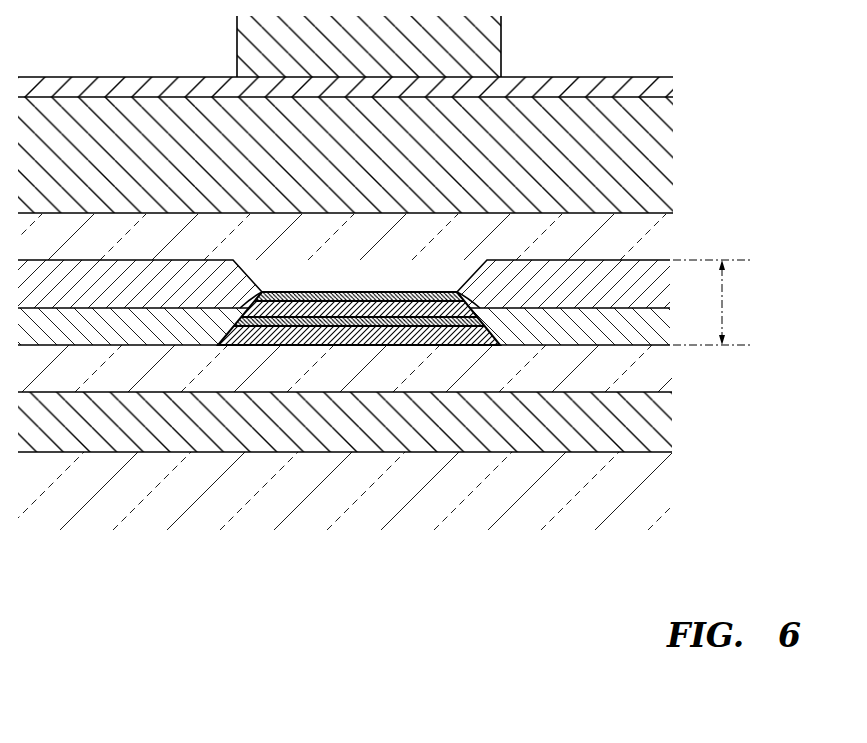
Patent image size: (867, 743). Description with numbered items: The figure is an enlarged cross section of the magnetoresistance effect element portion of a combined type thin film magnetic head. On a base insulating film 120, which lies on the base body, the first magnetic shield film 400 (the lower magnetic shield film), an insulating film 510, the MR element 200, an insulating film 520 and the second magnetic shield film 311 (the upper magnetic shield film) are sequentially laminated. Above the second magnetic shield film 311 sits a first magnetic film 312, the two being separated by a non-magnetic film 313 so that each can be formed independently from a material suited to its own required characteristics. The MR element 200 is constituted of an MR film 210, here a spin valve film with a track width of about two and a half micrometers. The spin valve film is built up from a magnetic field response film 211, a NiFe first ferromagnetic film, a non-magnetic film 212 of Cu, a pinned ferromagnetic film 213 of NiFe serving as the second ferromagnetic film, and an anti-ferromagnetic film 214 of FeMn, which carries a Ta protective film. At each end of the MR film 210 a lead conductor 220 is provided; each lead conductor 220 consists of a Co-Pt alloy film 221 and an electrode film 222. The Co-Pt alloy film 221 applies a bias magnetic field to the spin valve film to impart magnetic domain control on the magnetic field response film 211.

The base insulating film 120 is at (668, 498).
The MR element 200 is at (723, 300).
The MR film 210 is at (389, 302).
The magnetic field response film 211 is at (243, 335).
The non-magnetic film 212 is at (305, 325).
The pinned ferromagnetic film 213 is at (367, 309).
The anti-ferromagnetic film 214 is at (427, 295).
The lead conductor 220 is at (140, 452).
The Co-Pt alloy film 221 is at (32, 322).
The electrode film 222 is at (128, 290).
The second magnetic shield film 311 is at (645, 108).
The first magnetic film 312 is at (240, 38).
The non-magnetic film 313 is at (48, 95).
The first magnetic shield film 400 is at (660, 422).
The insulating film 510 is at (667, 373).
The insulating film 520 is at (660, 237).